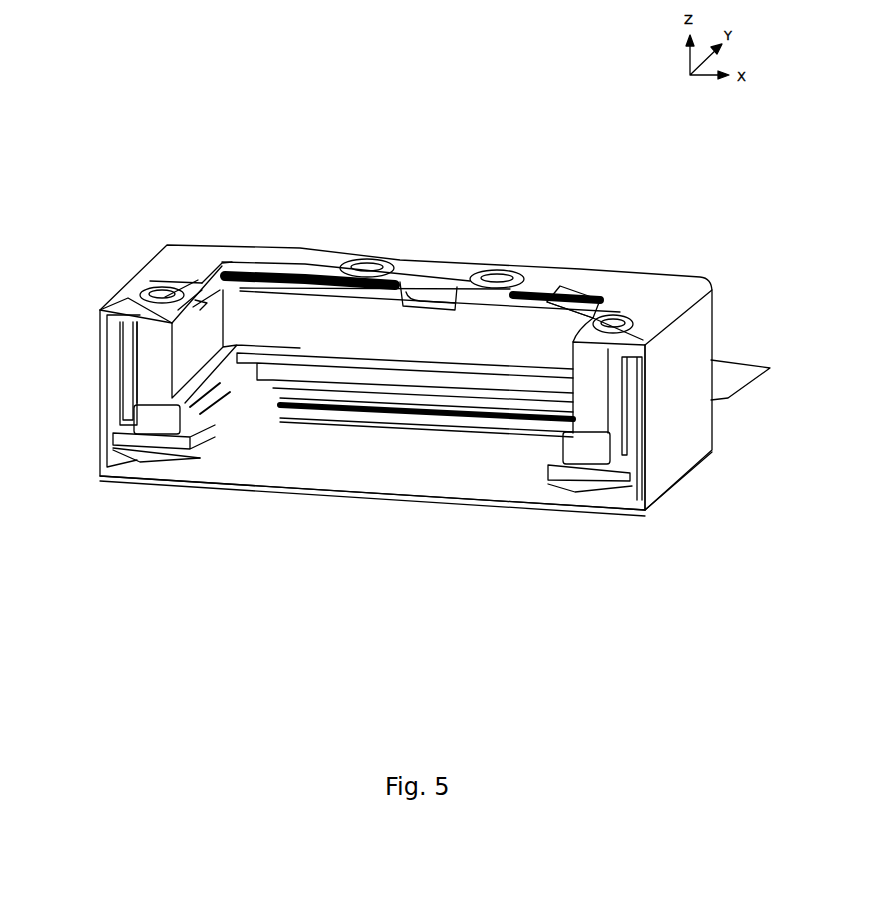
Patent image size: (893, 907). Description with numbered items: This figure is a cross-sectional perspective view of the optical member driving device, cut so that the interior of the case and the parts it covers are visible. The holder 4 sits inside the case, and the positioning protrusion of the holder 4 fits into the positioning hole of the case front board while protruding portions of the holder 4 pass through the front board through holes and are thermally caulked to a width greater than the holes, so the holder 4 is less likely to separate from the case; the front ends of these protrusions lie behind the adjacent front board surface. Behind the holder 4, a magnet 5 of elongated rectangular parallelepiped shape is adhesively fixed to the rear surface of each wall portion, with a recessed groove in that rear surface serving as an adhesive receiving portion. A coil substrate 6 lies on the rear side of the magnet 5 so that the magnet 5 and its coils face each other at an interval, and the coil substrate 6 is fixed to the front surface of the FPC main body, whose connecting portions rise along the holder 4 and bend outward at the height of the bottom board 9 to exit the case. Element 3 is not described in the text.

The holder 4 is at (143, 373).
The magnet 5 is at (143, 432).
The coil substrate 6 is at (165, 450).
The conductor 3 is at (283, 285).
The bottom board 9 is at (367, 493).